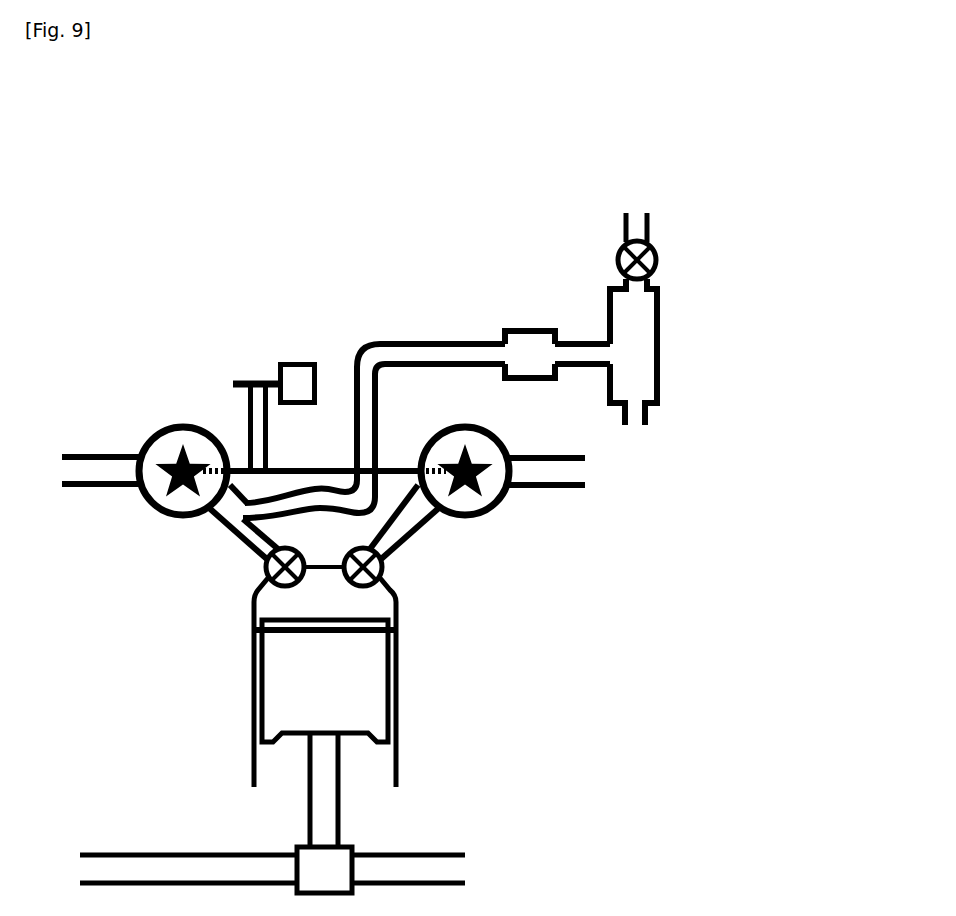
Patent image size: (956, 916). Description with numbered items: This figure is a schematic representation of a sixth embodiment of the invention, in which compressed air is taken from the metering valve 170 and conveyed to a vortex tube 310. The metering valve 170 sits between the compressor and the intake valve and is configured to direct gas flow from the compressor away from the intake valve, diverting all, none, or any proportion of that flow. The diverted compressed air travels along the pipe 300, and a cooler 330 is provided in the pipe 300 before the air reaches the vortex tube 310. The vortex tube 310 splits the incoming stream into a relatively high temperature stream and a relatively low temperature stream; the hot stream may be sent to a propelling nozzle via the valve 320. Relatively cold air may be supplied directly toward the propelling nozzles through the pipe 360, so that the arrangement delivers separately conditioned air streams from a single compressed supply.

The metering valve 170 is at (243, 520).
The pipe 300 is at (380, 345).
The vortex tube 310 is at (640, 343).
The valve 320 is at (632, 225).
The cooler 330 is at (533, 347).
The pipe 360 is at (630, 418).